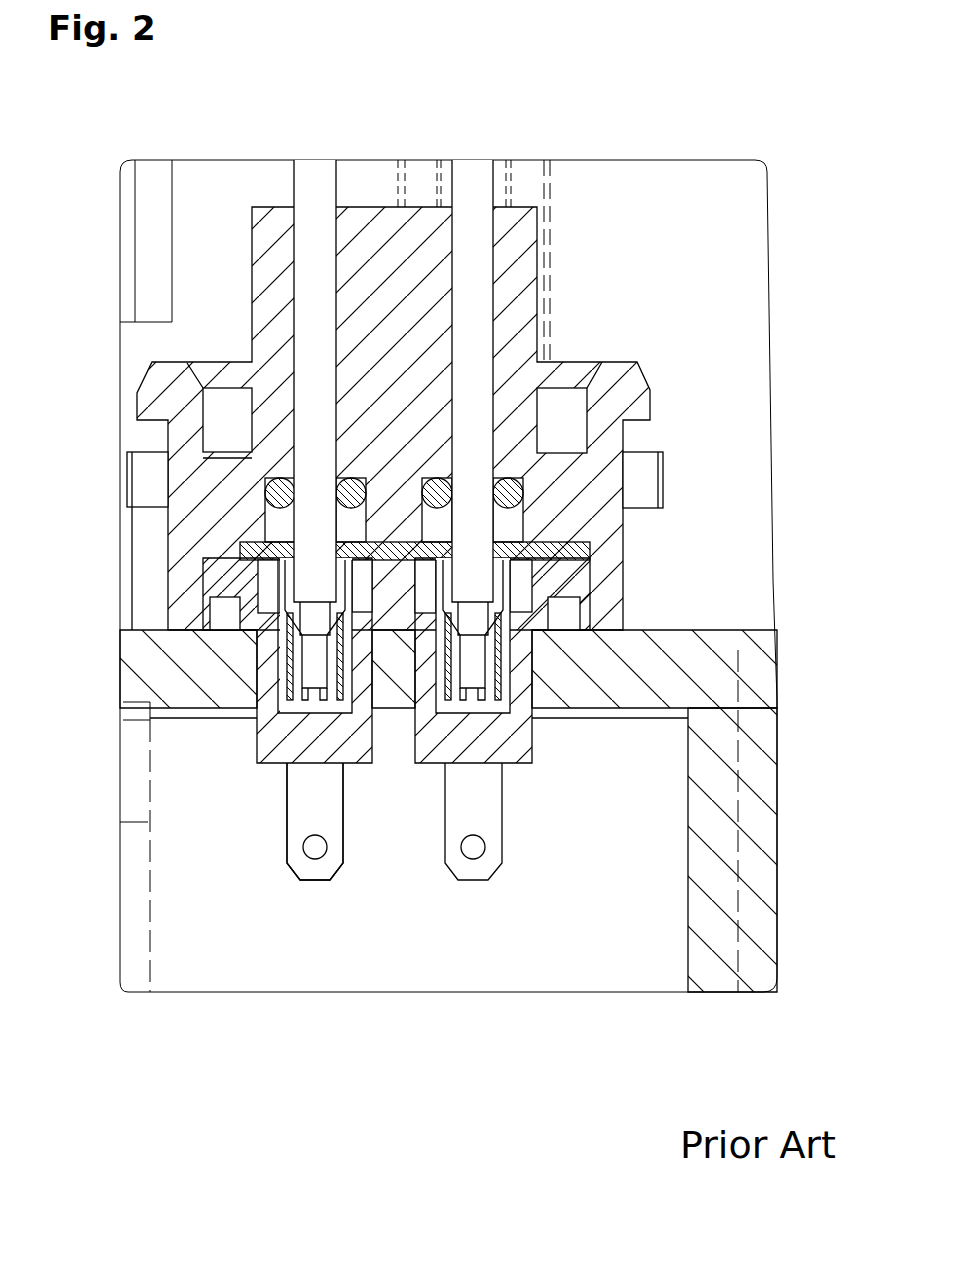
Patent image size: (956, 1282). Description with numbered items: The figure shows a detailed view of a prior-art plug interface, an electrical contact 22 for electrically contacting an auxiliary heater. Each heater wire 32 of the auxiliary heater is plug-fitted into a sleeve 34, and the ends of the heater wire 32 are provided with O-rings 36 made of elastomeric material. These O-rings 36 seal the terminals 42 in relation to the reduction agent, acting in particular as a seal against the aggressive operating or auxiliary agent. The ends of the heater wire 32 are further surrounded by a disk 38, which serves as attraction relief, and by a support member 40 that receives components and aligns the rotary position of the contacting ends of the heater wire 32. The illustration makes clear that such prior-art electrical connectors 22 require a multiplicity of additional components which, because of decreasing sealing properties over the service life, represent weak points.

The electrical contact 22 is at (535, 160).
The heater wire 32 is at (314, 182).
The sleeve 34 is at (272, 346).
The O-rings 36 is at (272, 490).
The disk 38 is at (527, 550).
The support member 40 is at (513, 650).
The terminals 42 is at (475, 880).